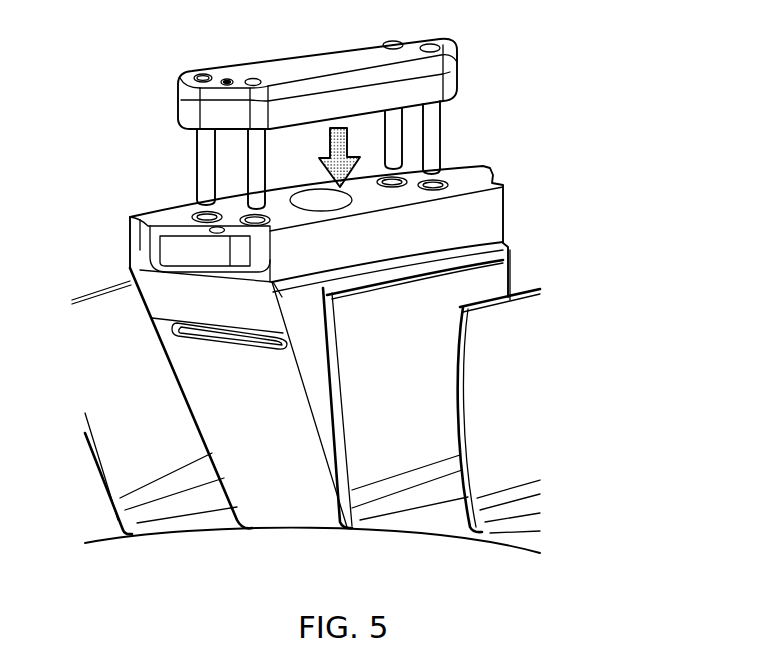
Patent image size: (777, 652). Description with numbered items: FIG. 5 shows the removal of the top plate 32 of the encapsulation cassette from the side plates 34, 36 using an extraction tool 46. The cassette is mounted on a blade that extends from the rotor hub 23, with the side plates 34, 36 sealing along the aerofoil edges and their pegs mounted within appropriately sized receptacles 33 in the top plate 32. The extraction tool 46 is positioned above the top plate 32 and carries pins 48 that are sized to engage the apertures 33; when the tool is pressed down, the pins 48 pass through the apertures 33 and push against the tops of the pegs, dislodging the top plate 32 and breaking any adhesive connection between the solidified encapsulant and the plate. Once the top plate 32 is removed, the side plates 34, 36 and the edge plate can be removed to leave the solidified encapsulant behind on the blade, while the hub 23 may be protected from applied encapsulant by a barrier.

The hub 23 is at (425, 528).
The top plate 32 is at (348, 207).
The receptacles 33 is at (445, 181).
The side plate 34 is at (516, 291).
The side plate 36 is at (270, 512).
The extraction tool 46 is at (455, 63).
The pins 48 is at (201, 146).